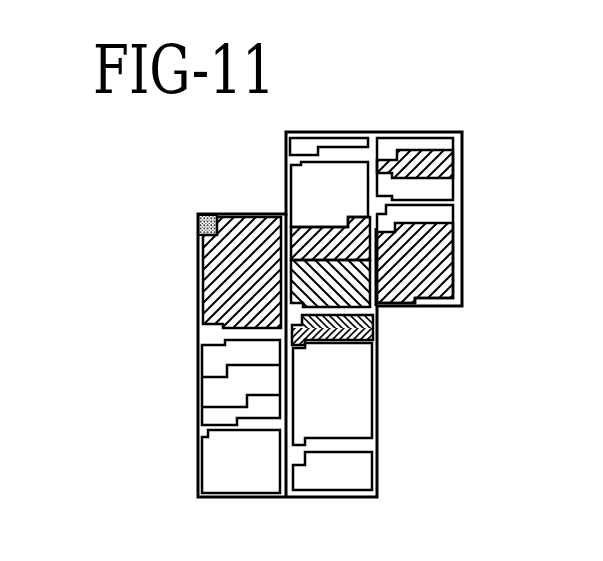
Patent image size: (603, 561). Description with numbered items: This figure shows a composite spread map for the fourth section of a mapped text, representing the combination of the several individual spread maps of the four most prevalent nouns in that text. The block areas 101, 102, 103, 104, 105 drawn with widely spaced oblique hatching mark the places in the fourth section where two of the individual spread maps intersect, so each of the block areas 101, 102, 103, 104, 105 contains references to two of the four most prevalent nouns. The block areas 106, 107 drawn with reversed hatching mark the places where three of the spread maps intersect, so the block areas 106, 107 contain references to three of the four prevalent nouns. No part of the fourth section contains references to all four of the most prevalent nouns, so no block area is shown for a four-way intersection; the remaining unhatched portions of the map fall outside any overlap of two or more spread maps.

The block area 101 is at (240, 278).
The block area 102 is at (313, 242).
The block area 103 is at (334, 333).
The block area 104 is at (423, 165).
The block area 105 is at (413, 253).
The block area 106 is at (379, 308).
The block area 107 is at (373, 340).